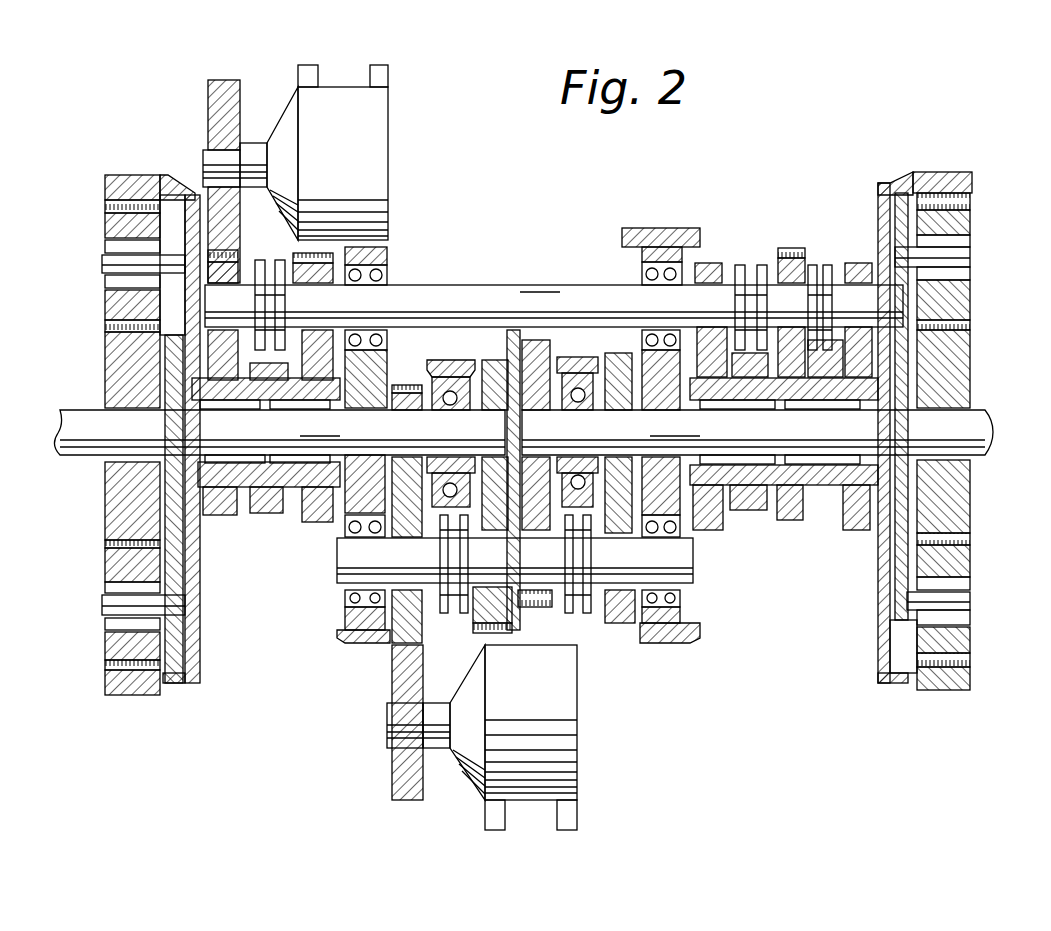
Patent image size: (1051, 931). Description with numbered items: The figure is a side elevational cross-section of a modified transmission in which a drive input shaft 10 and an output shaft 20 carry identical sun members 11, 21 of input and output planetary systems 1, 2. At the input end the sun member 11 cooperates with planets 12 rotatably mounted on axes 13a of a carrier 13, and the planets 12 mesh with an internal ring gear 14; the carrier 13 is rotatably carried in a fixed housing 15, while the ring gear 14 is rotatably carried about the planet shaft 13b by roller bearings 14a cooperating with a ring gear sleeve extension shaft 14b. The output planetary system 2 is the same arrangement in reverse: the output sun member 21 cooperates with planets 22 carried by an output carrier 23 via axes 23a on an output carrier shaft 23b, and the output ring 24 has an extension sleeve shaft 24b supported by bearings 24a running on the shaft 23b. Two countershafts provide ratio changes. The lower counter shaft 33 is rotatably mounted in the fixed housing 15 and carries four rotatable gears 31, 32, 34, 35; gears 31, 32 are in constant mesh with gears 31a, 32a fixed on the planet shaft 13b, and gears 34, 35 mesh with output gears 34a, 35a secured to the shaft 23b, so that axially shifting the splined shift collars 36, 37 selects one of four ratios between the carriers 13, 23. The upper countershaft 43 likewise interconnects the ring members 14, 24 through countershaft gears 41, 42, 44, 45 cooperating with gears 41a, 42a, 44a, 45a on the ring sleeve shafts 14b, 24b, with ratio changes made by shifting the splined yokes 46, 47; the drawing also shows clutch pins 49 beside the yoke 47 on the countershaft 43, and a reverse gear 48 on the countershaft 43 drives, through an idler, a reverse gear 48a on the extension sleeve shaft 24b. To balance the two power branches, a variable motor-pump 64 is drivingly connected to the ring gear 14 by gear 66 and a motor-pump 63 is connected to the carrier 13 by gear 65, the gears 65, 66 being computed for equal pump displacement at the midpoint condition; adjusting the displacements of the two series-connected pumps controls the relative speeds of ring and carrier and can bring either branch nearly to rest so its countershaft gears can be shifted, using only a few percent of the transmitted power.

The input planetary system 1 is at (212, 664).
The output planetary system 2 is at (866, 657).
The drive input shaft 10 is at (56, 412).
The sun member 11 is at (122, 490).
The planets 12 is at (130, 222).
The carrier 13 is at (175, 343).
The axes 13a is at (115, 602).
The planet shaft 13b is at (323, 425).
The internal ring gear 14 is at (125, 177).
The roller bearings 14a is at (262, 490).
The ring gear sleeve extension shaft 14b is at (266, 432).
The fixed housing 15 is at (375, 256).
The output shaft 20 is at (978, 408).
The output sun member 21 is at (955, 520).
The planets 22 is at (955, 225).
The output carrier 23 is at (902, 307).
The axes 23a is at (960, 258).
The output carrier shaft 23b is at (675, 425).
The output ring 24 is at (933, 183).
The bearings 24a is at (825, 403).
The extension sleeve shaft 24b is at (828, 480).
The gear 31 is at (400, 632).
The gear 31a is at (405, 385).
The gear 32 is at (500, 633).
The gear 32a is at (505, 360).
The counter shaft 33 is at (515, 560).
The gear 34 is at (538, 608).
The output gear 34a is at (535, 326).
The gear 35 is at (625, 632).
The output gear 35a is at (625, 360).
The shift collar 36 is at (443, 621).
The shift collar 37 is at (587, 606).
The countershaft gear 41 is at (230, 265).
The gear 41a is at (232, 510).
The countershaft gear 42 is at (302, 260).
The gear 42a is at (305, 518).
The countershaft 43 is at (502, 296).
The countershaft gear 44 is at (703, 262).
The gear 44a is at (706, 526).
The countershaft gear 45 is at (785, 250).
The gear 45a is at (786, 522).
The yoke 46 is at (260, 264).
The yoke 47 is at (742, 275).
The reverse gear 48 is at (855, 268).
The reverse gear 48a is at (860, 525).
The clutch pins 49 is at (815, 280).
The motor-pump 63 is at (557, 702).
The motor-pump 64 is at (335, 100).
The gear 65 is at (410, 682).
The gear 66 is at (208, 93).